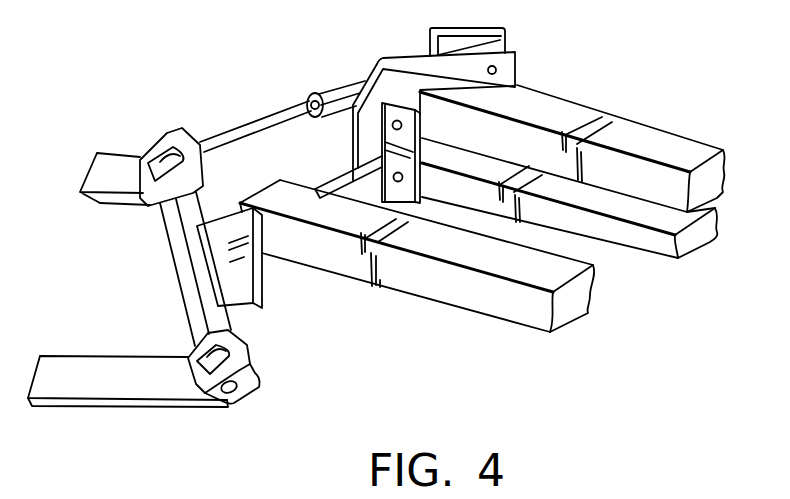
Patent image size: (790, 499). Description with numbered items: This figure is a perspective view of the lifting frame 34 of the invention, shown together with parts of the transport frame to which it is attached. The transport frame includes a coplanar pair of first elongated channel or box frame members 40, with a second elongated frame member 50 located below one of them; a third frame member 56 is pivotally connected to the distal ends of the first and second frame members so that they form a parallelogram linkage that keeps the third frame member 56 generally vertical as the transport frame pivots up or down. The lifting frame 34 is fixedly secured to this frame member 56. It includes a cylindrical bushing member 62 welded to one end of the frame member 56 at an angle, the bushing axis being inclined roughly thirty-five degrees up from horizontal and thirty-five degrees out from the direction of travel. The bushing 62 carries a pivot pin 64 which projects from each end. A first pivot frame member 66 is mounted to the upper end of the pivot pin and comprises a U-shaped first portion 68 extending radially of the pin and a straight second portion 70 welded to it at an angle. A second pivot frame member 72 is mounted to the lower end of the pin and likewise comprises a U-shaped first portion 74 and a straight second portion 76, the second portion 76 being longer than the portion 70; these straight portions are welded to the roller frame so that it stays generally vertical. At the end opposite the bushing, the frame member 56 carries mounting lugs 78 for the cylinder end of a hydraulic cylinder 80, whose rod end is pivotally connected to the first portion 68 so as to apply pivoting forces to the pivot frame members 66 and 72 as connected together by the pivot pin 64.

The lifting frame 34 is at (492, 345).
The first elongated frame members 40 is at (640, 133).
The second elongated frame member 50 is at (695, 235).
The third frame member 56 is at (334, 176).
The cylindrical bushing member 62 is at (185, 282).
The pivot pin 64 is at (143, 160).
The first pivot frame member 66 is at (112, 215).
The U-shaped first portion 68 is at (167, 128).
The straight second portion 70 is at (98, 165).
The second pivot frame member 72 is at (180, 418).
The U-shaped first portion 74 is at (240, 394).
The straight second portion 76 is at (72, 383).
The mounting lugs 78 is at (485, 28).
The hydraulic cylinder 80 is at (336, 74).